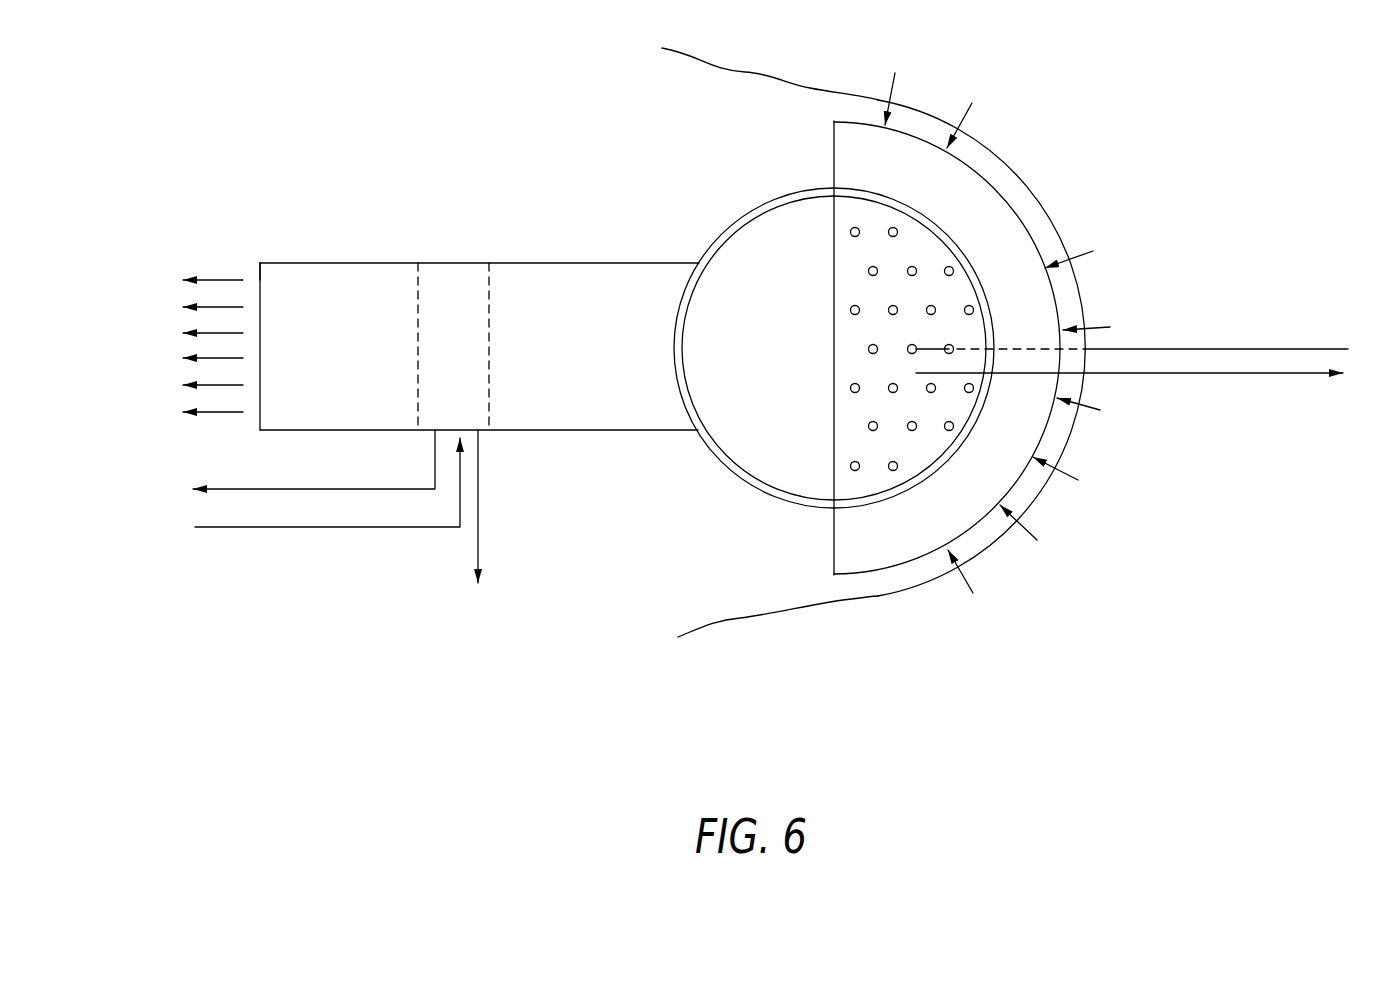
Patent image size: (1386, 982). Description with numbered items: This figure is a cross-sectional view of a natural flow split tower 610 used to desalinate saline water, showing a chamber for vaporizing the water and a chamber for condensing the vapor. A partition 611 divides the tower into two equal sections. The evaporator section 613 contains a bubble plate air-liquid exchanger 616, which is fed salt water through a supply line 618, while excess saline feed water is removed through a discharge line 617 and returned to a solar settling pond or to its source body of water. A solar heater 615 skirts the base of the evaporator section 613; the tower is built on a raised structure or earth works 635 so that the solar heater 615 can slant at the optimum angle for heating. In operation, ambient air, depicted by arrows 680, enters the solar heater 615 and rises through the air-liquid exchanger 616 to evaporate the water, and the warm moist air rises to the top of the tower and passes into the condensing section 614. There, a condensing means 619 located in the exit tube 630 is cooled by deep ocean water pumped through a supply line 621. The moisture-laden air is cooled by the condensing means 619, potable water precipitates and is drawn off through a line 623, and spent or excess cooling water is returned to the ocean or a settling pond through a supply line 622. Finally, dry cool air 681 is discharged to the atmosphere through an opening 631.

The tower 610 is at (775, 197).
The partition 611 is at (833, 265).
The evaporator section 613 is at (922, 242).
The condensing section 614 is at (540, 388).
The solar heater 615 is at (997, 263).
The bubble plate air-liquid exchanger 616 is at (930, 337).
The discharge line 617 is at (1290, 373).
The supply line 618 is at (1248, 349).
The condensing means 619 is at (442, 288).
The supply line 621 is at (305, 527).
The supply line 622 is at (265, 489).
The line 623 is at (478, 527).
The exit tube 630 is at (337, 262).
The opening 631 is at (260, 275).
The raised structure or earth works 635 is at (870, 585).
The arrows 680 is at (967, 115).
The dry cool air 681 is at (217, 330).